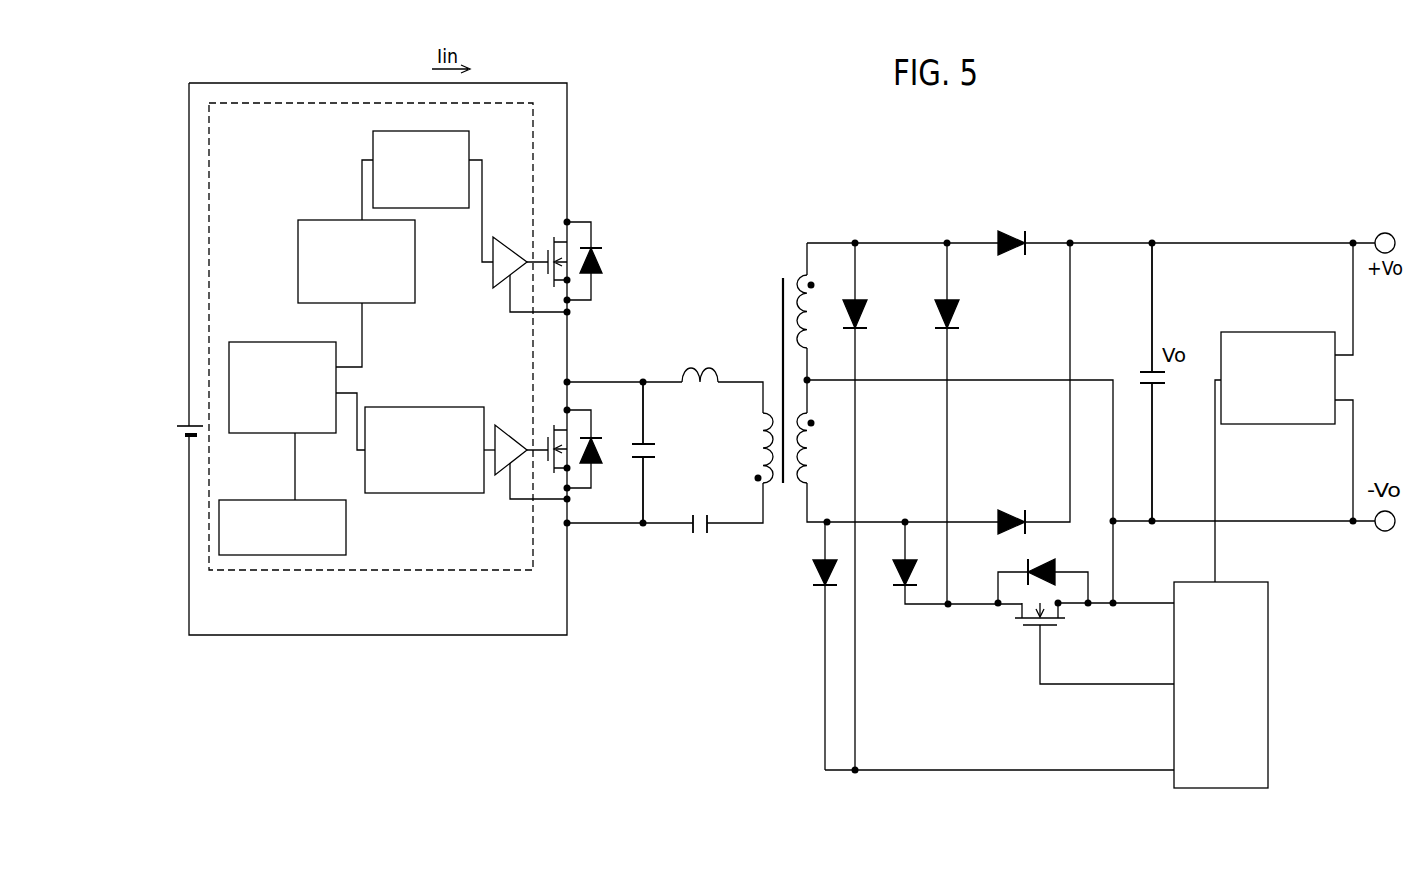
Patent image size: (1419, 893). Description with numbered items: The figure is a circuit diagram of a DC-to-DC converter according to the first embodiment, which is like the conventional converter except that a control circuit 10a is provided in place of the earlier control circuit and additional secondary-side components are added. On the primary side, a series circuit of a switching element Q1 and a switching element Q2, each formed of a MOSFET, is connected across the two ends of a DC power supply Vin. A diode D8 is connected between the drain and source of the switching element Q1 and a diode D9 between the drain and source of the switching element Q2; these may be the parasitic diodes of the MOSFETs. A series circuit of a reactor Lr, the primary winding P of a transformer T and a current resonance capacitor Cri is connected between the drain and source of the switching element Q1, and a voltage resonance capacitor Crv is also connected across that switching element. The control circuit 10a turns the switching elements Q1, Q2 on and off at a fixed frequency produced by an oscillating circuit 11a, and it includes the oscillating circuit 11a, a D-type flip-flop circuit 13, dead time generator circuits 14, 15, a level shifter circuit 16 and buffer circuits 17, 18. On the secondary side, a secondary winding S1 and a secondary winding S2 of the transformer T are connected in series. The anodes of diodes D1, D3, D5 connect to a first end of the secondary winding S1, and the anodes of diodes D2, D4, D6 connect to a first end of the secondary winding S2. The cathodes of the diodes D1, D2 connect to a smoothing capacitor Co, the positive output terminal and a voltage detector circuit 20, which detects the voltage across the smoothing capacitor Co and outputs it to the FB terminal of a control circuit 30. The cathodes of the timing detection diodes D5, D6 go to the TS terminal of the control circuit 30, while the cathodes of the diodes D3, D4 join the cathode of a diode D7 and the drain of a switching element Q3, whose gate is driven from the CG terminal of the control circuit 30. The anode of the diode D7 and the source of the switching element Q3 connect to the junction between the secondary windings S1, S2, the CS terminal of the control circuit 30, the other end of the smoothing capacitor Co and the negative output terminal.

The control circuit 10a is at (462, 570).
The oscillating circuit 11a is at (268, 500).
The D-type flip-flop circuit 13 is at (268, 342).
The dead time generator circuit 14 is at (430, 407).
The dead time generator circuit 15 is at (298, 235).
The level shifter circuit 16 is at (453, 208).
The buffer circuit 17 is at (500, 425).
The buffer circuit 18 is at (492, 282).
The voltage detector circuit 20 is at (1308, 332).
The control circuit 30 is at (1268, 655).
The switching element Q1 is at (552, 464).
The switching element Q2 is at (552, 275).
The switching element Q3 is at (1081, 643).
The diode D1 is at (1011, 230).
The diode D2 is at (1012, 510).
The diode D3 is at (961, 423).
The diode D4 is at (942, 563).
The diode D5 is at (869, 506).
The diode D6 is at (810, 646).
The diode D7 is at (1043, 575).
The diode D8 is at (596, 450).
The diode D9 is at (601, 261).
The reactor Lr is at (700, 363).
The voltage resonance capacitor Crv is at (661, 452).
The current resonance capacitor Cri is at (716, 532).
The smoothing capacitor Co is at (1163, 382).
The transformer T is at (791, 367).
The primary winding P is at (758, 448).
The secondary winding S1 is at (818, 311).
The secondary winding S2 is at (818, 448).
The DC power supply Vin is at (362, 359).